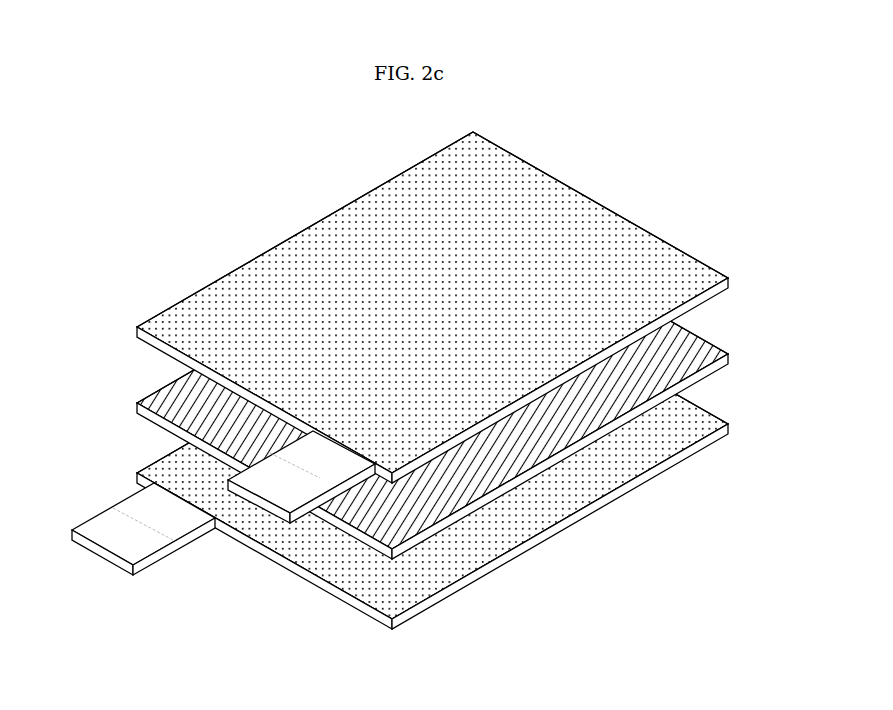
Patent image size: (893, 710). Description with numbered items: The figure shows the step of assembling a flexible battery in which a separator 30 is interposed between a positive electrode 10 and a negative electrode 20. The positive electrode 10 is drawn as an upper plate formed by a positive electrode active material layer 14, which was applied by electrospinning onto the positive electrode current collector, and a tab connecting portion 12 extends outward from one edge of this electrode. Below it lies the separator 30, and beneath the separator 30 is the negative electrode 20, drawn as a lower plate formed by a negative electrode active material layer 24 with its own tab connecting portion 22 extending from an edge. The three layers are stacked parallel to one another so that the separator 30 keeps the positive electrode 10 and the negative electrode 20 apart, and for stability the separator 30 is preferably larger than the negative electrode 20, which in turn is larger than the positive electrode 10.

The positive electrode 10 is at (432, 366).
The tab connecting portion 12 is at (278, 493).
The positive electrode active material layer 14 is at (678, 266).
The negative electrode 20 is at (417, 475).
The tab connecting portion 22 is at (142, 556).
The negative electrode active material layer 24 is at (703, 421).
The separator 30 is at (131, 400).